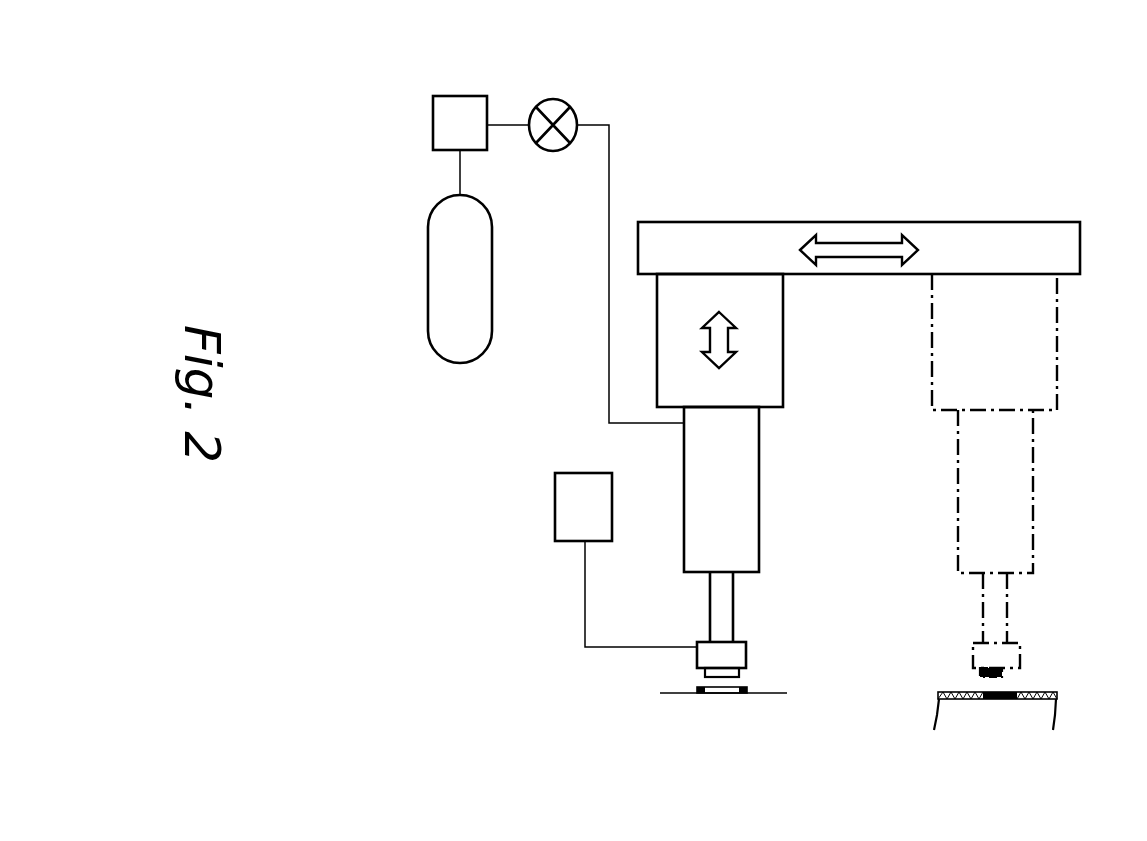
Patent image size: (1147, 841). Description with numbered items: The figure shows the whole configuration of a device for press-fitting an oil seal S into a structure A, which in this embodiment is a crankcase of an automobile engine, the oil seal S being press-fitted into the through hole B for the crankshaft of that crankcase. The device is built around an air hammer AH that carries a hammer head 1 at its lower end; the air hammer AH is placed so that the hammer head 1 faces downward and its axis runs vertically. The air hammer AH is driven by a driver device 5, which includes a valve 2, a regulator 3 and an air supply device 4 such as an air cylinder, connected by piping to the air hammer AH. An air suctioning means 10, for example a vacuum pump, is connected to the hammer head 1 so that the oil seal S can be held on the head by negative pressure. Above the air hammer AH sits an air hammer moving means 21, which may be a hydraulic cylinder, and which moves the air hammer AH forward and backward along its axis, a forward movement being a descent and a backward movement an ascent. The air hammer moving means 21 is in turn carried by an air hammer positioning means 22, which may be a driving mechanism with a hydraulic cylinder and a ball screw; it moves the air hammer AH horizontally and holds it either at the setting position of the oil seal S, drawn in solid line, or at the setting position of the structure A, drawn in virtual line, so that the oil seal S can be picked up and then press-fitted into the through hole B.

The hammer head 1 is at (746, 648).
The valve 2 is at (557, 102).
The regulator 3 is at (465, 100).
The air supply device 4 is at (445, 267).
The driver device 5 is at (425, 157).
The air suctioning means 10 is at (555, 503).
The air hammer moving means 21 is at (783, 342).
The air hammer positioning means 22 is at (965, 220).
The air hammer AH is at (758, 483).
The oil seal S is at (703, 682).
The structure A is at (1045, 691).
The through hole B is at (1007, 700).